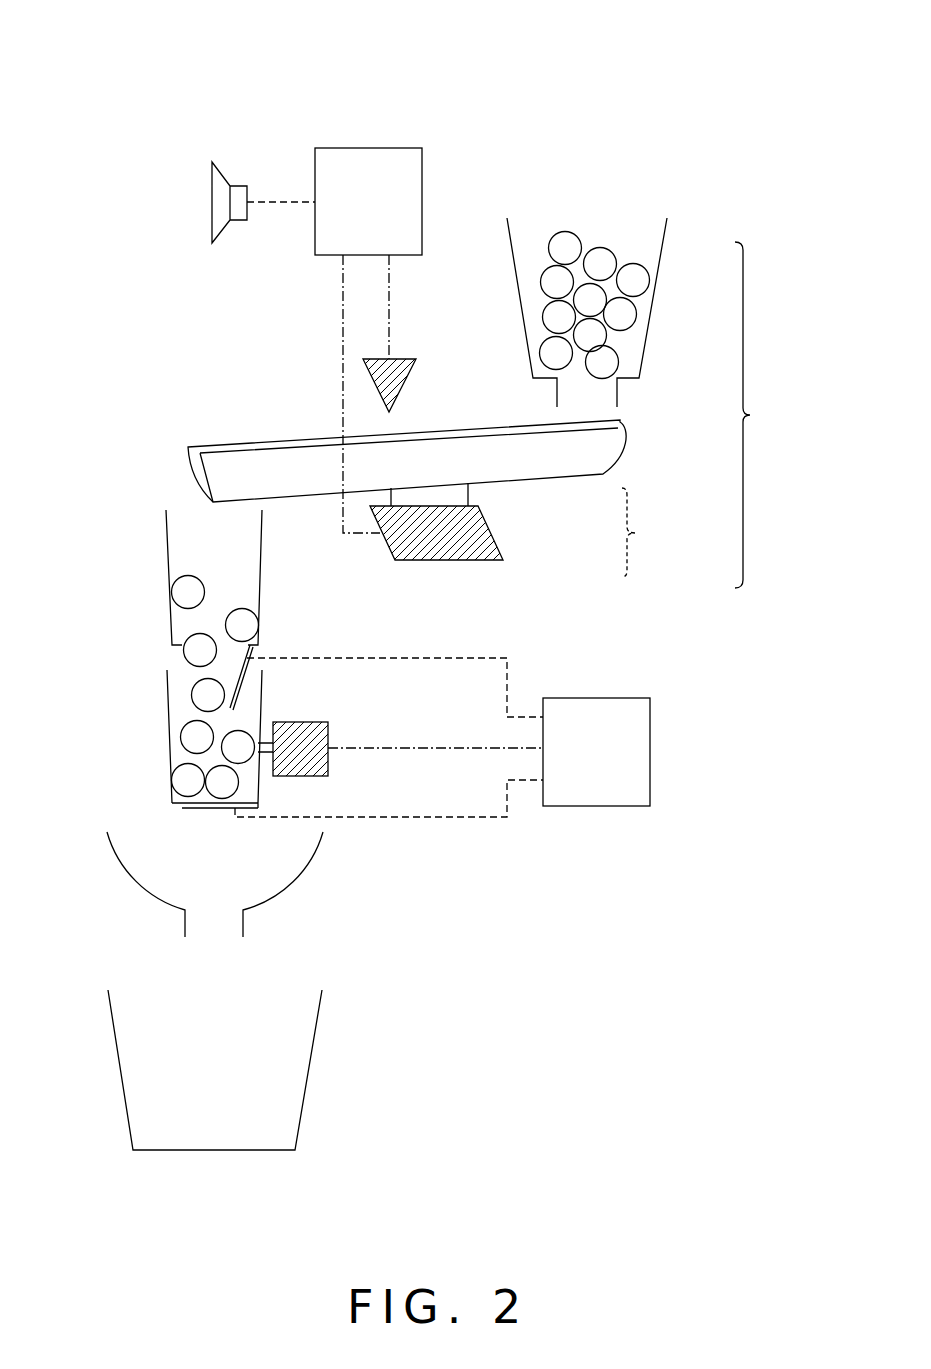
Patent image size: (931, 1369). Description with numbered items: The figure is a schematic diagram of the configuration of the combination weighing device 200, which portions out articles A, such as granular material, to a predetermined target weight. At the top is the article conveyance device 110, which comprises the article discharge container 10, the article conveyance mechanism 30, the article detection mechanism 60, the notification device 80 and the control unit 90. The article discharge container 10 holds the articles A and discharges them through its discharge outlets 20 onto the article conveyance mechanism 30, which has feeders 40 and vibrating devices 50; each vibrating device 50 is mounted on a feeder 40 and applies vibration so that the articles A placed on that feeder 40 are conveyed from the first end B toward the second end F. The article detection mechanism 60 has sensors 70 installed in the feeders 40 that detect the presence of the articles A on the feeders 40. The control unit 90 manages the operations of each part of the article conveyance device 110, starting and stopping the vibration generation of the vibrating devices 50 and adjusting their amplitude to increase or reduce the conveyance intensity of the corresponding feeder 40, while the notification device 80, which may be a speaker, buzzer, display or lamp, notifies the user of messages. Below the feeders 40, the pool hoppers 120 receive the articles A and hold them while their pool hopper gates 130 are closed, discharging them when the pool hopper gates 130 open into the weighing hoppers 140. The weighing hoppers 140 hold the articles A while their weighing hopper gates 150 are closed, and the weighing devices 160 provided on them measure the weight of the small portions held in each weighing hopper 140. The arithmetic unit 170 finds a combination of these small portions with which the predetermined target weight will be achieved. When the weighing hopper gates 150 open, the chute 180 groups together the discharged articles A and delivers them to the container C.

The combination weighing device 200 is at (105, 72).
The notification device 80 is at (238, 197).
The control unit 90 is at (363, 165).
The article detection mechanism 60 is at (415, 334).
The sensors 70 is at (387, 382).
The article discharge container 10 is at (650, 300).
The discharge outlets 20 is at (617, 396).
The article conveyance device 110 is at (775, 415).
The feeders 40 is at (515, 470).
The vibrating devices 50 is at (490, 545).
The article conveyance mechanism 30 is at (653, 532).
The pool hoppers 120 is at (168, 573).
The pool hopper gates 130 is at (235, 675).
The weighing hoppers 140 is at (167, 720).
The weighing hopper gates 150 is at (215, 810).
The weighing devices 160 is at (310, 740).
The arithmetic unit 170 is at (640, 755).
The chute 180 is at (290, 880).
The articles A is at (628, 277).
The first end B is at (603, 447).
The second end F is at (225, 473).
The container C is at (308, 1072).